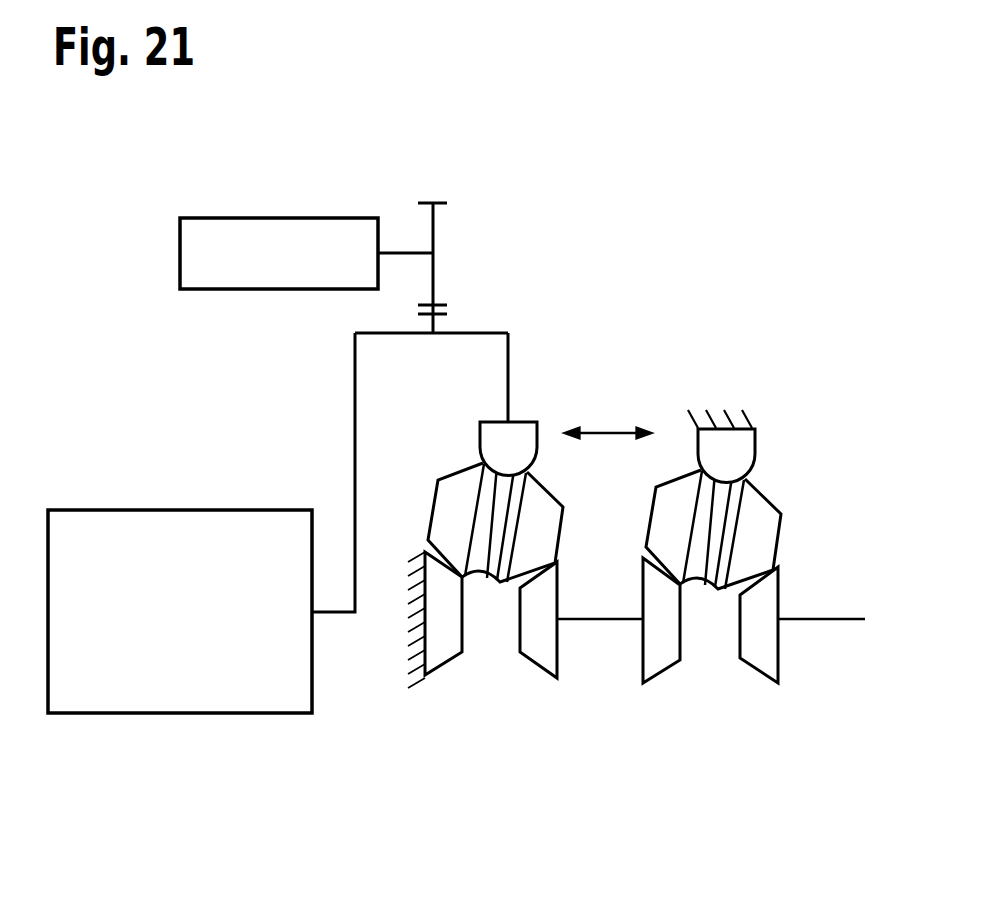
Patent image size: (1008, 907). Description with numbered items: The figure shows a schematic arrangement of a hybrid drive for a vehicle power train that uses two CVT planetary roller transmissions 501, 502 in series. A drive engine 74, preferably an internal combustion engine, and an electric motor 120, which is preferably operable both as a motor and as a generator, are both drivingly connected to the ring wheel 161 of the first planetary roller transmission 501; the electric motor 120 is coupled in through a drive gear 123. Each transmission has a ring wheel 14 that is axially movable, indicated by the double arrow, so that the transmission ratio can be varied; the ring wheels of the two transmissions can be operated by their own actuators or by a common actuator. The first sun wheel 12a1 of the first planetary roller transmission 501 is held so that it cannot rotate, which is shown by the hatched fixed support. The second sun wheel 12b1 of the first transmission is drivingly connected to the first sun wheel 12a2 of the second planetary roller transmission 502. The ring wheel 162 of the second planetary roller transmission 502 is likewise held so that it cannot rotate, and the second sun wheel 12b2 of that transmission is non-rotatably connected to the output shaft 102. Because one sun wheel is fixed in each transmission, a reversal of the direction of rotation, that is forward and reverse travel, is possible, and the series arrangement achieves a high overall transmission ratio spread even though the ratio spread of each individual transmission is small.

The electric motor 120 is at (286, 232).
The drive gear 123 is at (434, 226).
The drive engine 74 is at (185, 526).
The coupling ring 14 is at (448, 470).
The ring wheel 161 is at (527, 452).
The ring wheel 162 is at (742, 452).
The first sun wheel 12a1 is at (440, 653).
The second sun wheel 12b1 is at (548, 655).
The first sun wheel 12a2 is at (658, 658).
The second sun wheel 12b2 is at (767, 658).
The planetary roller transmission 501 is at (495, 618).
The planetary roller transmission 502 is at (713, 625).
The output shaft 102 is at (832, 618).